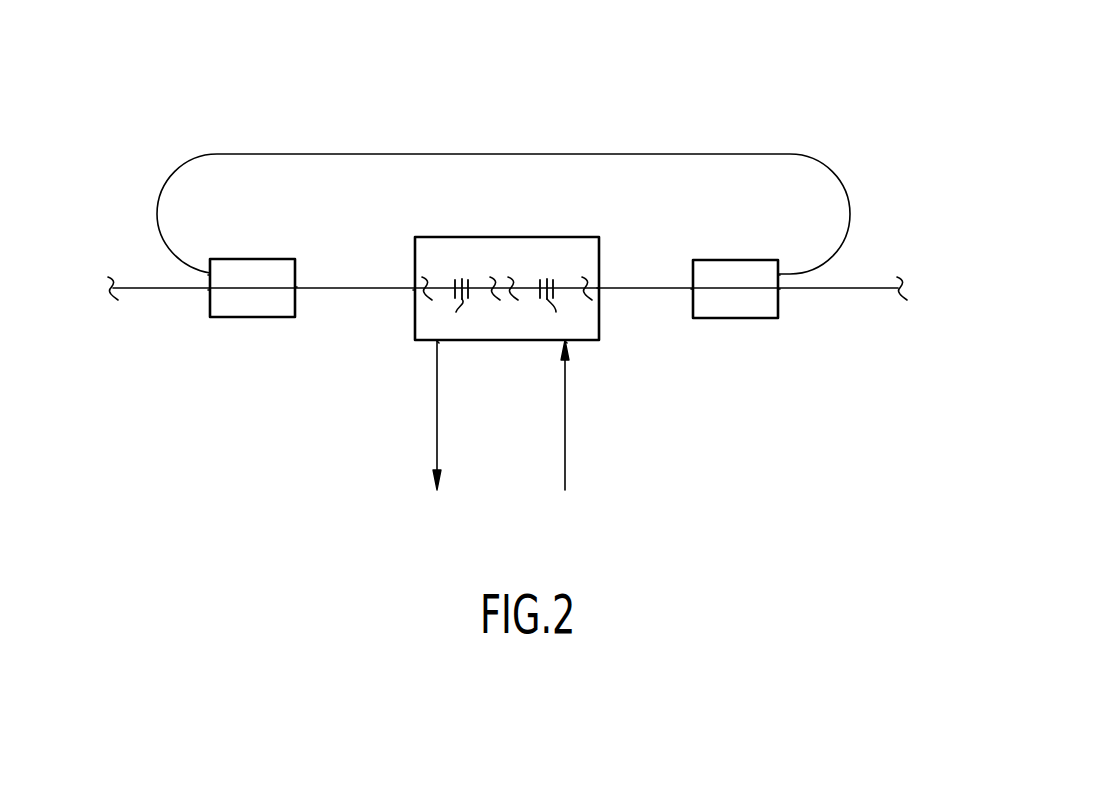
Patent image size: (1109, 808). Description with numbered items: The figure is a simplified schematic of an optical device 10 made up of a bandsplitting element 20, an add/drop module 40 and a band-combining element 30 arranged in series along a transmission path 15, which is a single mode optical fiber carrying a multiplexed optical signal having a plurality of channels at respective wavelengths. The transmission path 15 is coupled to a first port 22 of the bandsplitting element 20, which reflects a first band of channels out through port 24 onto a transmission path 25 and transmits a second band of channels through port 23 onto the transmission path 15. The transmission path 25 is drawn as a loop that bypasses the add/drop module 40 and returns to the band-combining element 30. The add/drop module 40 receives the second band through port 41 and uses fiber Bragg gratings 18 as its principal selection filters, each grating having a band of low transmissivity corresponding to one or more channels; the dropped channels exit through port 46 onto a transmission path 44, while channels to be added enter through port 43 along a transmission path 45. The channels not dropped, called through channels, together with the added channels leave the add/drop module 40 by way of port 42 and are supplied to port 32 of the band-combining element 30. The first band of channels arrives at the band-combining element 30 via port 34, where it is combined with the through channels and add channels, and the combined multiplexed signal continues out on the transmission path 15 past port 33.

The optical device 10 is at (760, 98).
The transmission path 15 is at (178, 288).
The transmission path 25 is at (650, 154).
The bandsplitting element 20 is at (263, 277).
The port 24 is at (208, 275).
The first port 22 is at (208, 290).
The port 23 is at (297, 287).
The add/drop module 40 is at (490, 236).
The port 41 is at (413, 290).
The port 42 is at (599, 288).
The fiber Bragg gratings 18 is at (507, 308).
The transmission path 44 is at (437, 425).
The port 46 is at (439, 343).
The transmission path 45 is at (565, 407).
The port 43 is at (567, 343).
The band-combining element 30 is at (710, 275).
The port 32 is at (693, 289).
The port 34 is at (778, 275).
The second coupler output port 33 is at (778, 289).